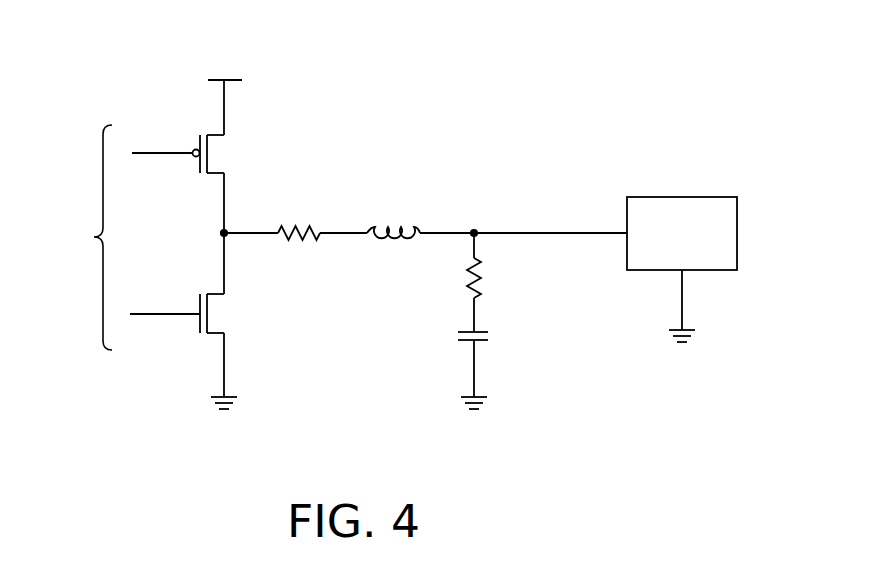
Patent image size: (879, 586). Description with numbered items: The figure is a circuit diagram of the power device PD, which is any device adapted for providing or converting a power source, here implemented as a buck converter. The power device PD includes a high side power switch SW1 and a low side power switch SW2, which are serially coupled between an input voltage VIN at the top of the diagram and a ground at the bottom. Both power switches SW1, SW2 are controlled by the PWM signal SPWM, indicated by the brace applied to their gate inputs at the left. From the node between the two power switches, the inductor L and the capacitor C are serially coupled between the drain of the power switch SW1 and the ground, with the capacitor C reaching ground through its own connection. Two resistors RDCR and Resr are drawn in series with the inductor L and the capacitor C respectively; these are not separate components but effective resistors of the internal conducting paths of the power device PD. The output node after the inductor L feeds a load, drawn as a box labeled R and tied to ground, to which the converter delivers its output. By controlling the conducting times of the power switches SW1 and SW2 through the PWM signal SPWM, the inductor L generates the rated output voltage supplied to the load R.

The power device PD is at (533, 103).
The input voltage VIN is at (228, 90).
The high side power switch SW1 is at (227, 152).
The low side power switch SW2 is at (220, 313).
The PWM signal SPWM is at (71, 237).
The resistor RDCR is at (303, 218).
The inductor L is at (393, 214).
The resistor Resr is at (500, 282).
The capacitor C is at (487, 366).
The load R is at (658, 197).